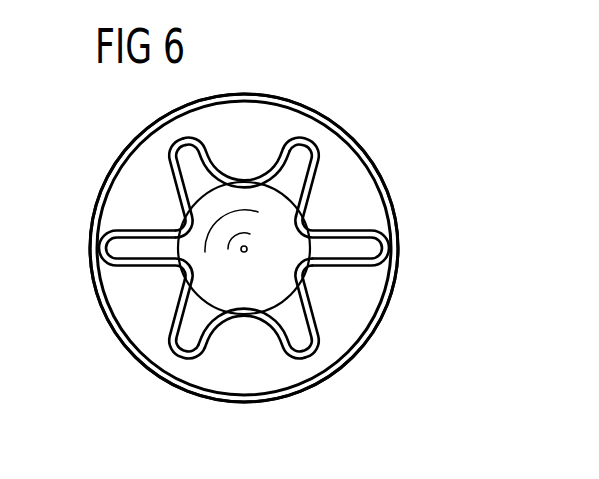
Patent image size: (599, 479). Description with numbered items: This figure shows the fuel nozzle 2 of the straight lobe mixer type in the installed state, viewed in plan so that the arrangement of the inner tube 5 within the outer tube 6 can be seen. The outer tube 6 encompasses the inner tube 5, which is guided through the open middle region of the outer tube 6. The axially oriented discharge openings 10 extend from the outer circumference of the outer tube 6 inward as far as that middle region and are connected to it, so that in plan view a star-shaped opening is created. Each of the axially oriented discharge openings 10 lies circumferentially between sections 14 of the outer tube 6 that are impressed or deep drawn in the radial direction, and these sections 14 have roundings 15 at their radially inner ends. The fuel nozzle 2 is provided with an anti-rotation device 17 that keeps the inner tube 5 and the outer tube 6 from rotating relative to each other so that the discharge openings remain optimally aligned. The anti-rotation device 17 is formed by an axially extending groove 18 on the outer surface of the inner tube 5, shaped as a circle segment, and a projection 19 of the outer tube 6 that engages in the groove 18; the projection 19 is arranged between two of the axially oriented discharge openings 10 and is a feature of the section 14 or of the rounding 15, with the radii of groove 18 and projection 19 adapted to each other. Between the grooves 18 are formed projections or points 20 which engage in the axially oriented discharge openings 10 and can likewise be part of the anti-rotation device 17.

The fuel nozzle 2 is at (377, 363).
The anti-rotation device 17 is at (372, 135).
The outer tube 6 is at (383, 313).
The inner tube 5 is at (283, 262).
The axially oriented discharge openings 10 is at (337, 245).
The sections 14 is at (245, 181).
The roundings 15 is at (250, 307).
The groove 18 is at (202, 280).
The projection 19 is at (176, 217).
The projections or points 20 is at (210, 308).